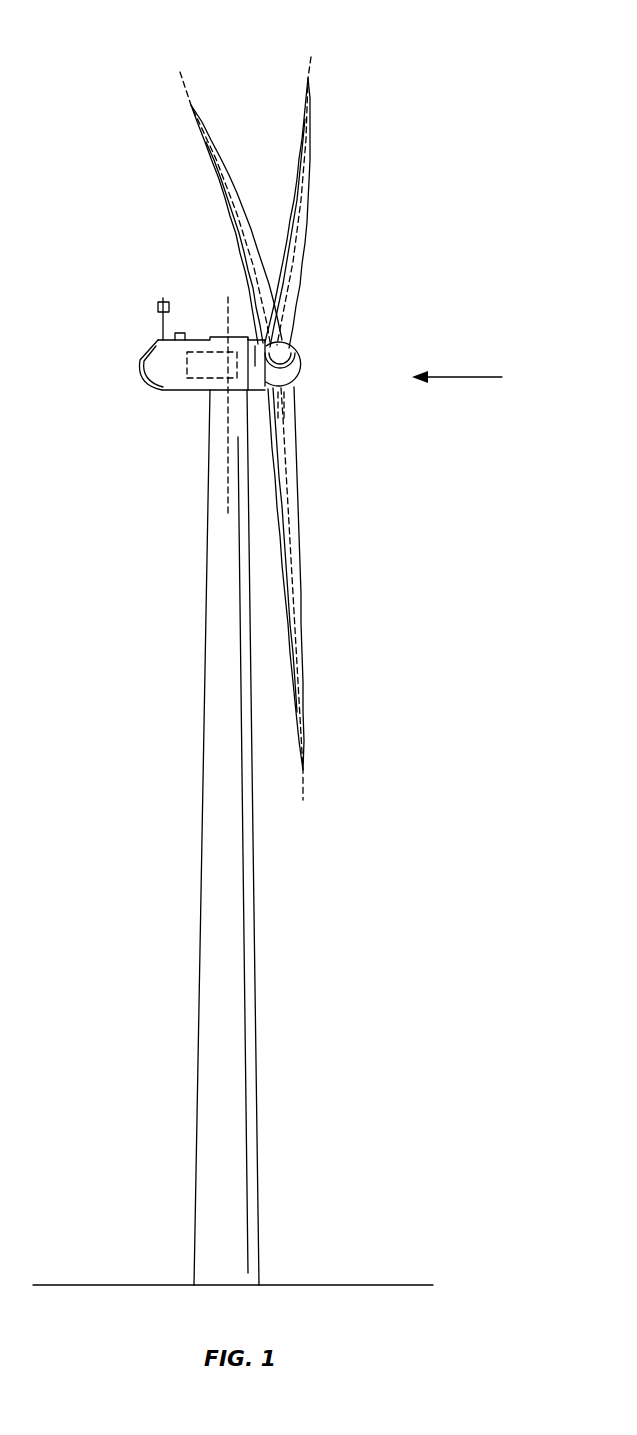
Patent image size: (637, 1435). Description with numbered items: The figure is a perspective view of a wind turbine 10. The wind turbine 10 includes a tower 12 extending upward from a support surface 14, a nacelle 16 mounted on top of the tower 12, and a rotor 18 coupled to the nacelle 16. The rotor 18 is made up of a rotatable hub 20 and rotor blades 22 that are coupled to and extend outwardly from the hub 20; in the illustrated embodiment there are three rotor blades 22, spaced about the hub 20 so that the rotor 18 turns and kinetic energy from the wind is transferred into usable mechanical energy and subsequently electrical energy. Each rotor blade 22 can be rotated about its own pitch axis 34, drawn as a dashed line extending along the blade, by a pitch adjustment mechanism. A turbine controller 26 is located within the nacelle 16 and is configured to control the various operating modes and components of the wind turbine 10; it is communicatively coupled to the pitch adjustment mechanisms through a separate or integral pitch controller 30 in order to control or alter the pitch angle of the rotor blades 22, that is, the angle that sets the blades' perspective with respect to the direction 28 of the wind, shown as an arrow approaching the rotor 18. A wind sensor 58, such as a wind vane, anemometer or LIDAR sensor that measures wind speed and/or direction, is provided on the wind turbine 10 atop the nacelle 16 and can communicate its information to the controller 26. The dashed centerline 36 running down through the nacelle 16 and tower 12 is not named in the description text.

The wind turbine 10 is at (432, 208).
The tower 12 is at (250, 967).
The support surface 14 is at (116, 1285).
The nacelle 16 is at (173, 392).
The rotor 18 is at (313, 340).
The rotatable hub 20 is at (309, 364).
The rotor blade 22 is at (230, 197).
The turbine controller 26 is at (207, 350).
The direction of the wind 28 is at (463, 377).
The pitch controller 30 is at (297, 370).
The pitch axis 34 is at (187, 88).
The yaw axis 36 is at (227, 458).
The wind sensor 58 is at (163, 323).